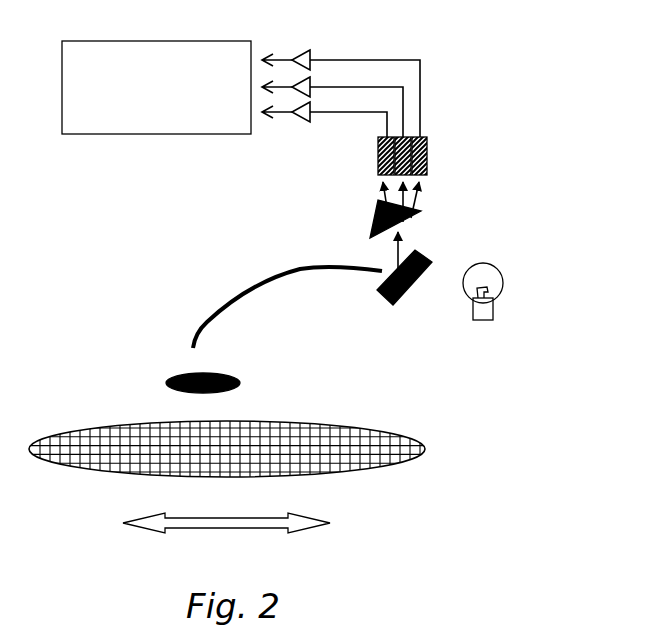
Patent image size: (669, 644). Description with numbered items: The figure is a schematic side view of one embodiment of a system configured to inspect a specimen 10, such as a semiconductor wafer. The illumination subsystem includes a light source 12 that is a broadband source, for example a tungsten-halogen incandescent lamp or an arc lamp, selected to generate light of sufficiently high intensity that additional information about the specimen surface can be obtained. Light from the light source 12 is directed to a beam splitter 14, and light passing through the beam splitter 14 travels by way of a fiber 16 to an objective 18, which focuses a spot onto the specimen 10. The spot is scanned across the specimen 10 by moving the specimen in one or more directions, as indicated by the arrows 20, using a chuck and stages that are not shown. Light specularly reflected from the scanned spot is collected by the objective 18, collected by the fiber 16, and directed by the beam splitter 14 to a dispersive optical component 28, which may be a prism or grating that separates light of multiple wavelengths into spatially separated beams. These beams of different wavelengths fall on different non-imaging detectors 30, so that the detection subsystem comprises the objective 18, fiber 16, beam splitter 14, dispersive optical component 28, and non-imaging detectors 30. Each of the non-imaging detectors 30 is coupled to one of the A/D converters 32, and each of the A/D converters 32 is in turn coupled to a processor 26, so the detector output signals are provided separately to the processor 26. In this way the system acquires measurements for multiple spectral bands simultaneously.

The specimen 10 is at (412, 437).
The light source 12 is at (496, 310).
The beam splitter 14 is at (424, 258).
The fiber 16 is at (206, 324).
The objective 18 is at (238, 378).
The arrows 20 is at (309, 527).
The processor 26 is at (156, 87).
The dispersive optical component 28 is at (421, 211).
The non-imaging detectors 30 is at (427, 152).
The A/D converters 32 is at (310, 50).